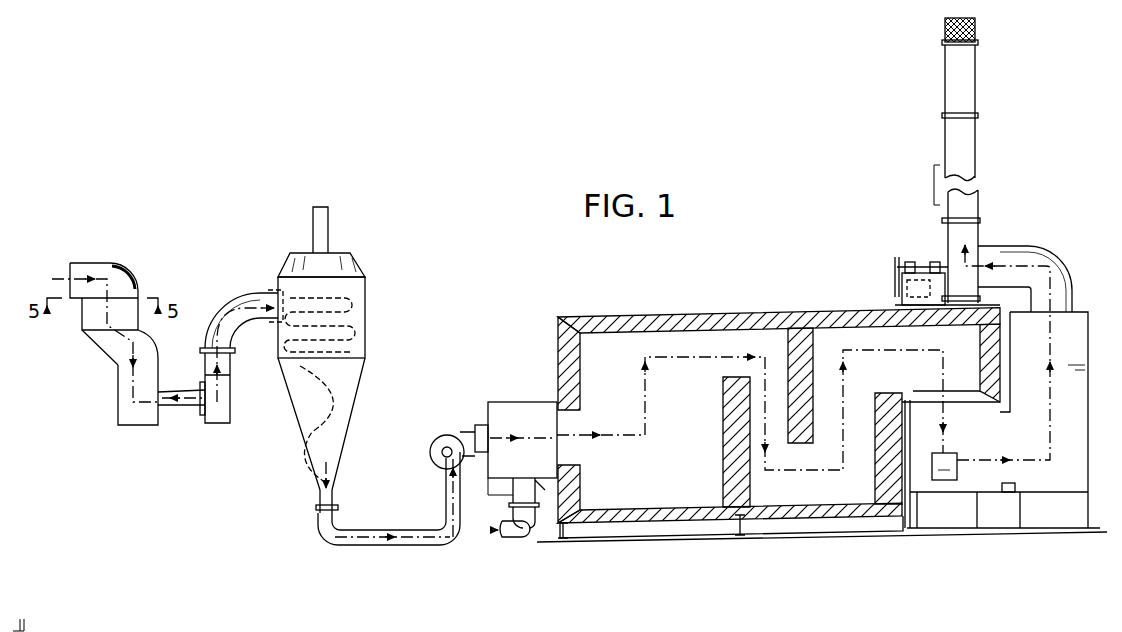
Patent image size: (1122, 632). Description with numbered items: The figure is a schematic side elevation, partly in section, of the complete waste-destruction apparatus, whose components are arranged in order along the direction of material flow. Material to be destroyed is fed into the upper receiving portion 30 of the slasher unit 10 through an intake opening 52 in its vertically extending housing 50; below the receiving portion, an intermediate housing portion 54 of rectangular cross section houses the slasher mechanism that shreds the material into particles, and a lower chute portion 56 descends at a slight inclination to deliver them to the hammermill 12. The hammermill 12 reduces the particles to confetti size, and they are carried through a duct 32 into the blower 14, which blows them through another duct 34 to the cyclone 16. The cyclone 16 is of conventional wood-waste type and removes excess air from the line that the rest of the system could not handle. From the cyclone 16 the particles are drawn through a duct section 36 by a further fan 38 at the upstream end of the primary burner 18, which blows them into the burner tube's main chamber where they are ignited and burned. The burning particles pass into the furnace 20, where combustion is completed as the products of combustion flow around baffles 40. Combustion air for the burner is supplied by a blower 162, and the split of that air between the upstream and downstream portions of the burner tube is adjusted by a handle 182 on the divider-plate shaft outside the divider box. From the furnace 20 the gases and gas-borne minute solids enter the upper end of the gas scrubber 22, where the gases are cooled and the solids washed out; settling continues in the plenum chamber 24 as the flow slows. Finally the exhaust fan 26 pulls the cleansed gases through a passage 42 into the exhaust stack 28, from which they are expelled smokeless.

The slasher unit 10 is at (78, 313).
The hammermill 12 is at (115, 404).
The blower 14 is at (220, 428).
The cyclone 16 is at (368, 317).
The primary burner 18 is at (500, 400).
The furnace 20 is at (716, 309).
The gas scrubber 22 is at (924, 504).
The plenum chamber 24 is at (1094, 429).
The exhaust fan 26 is at (943, 251).
The exhaust stack 28 is at (978, 140).
The upper receiving portion 30 is at (127, 268).
The duct 32 is at (189, 408).
The duct 34 is at (245, 298).
The duct section 36 is at (377, 528).
The fan 38 is at (442, 437).
The baffles 40 is at (753, 468).
The passage 42 is at (1046, 248).
The housing 50 is at (142, 279).
The intake opening 52 is at (70, 271).
The intermediate housing portion 54 is at (141, 316).
The chute portion 56 is at (101, 351).
The blower 162 is at (531, 542).
The handle 182 is at (535, 486).